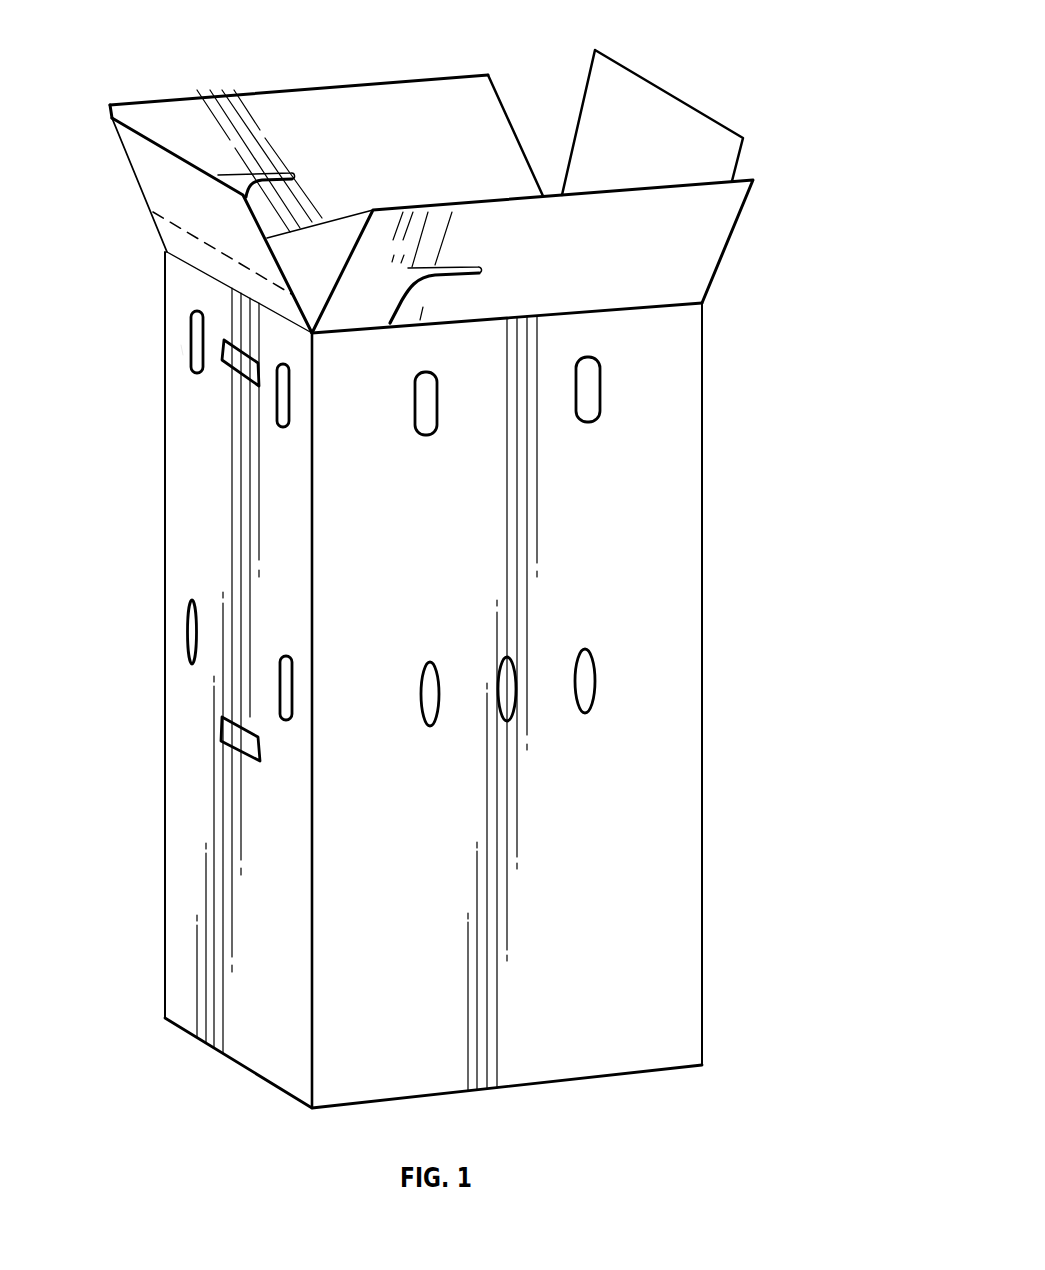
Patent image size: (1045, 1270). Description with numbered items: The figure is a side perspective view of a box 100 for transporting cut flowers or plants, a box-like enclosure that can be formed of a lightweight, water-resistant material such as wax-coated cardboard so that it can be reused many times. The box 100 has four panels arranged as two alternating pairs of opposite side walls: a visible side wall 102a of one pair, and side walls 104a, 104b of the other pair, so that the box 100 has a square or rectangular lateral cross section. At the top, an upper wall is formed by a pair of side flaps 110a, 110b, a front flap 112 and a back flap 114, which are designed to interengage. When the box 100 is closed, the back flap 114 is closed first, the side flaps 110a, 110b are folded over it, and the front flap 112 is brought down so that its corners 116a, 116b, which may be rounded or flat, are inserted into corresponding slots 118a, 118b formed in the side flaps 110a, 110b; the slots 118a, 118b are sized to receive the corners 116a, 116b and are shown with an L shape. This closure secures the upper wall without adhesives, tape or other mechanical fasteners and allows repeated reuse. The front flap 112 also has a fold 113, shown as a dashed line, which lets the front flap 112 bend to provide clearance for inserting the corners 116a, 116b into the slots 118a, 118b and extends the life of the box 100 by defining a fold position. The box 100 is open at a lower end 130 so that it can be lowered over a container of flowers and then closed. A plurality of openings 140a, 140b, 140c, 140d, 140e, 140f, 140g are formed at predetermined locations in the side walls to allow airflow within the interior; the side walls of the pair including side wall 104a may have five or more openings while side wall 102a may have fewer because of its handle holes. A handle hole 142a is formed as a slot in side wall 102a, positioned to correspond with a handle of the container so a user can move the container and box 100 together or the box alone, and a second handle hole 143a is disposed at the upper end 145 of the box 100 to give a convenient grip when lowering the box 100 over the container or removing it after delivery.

The box 100 is at (676, 62).
The side wall 102a is at (178, 908).
The side wall 104a is at (683, 588).
The side wall 104b is at (330, 245).
The side flap 110a is at (712, 252).
The side flap 110b is at (180, 108).
The front flap 112 is at (147, 185).
The fold 113 is at (188, 233).
The back flap 114 is at (662, 97).
The corner 116a is at (246, 211).
The corner 116b is at (122, 133).
The slot 118a is at (483, 269).
The slot 118b is at (286, 174).
The lower end 130 is at (244, 1073).
The opening 140a is at (197, 342).
The opening 140b is at (283, 405).
The opening 140c is at (426, 403).
The opening 140d is at (590, 393).
The opening 140e is at (428, 694).
The opening 140f is at (503, 700).
The opening 140g is at (587, 688).
The handle hole 142a is at (235, 740).
The handle hole 143a is at (237, 362).
The upper end 145 is at (181, 350).